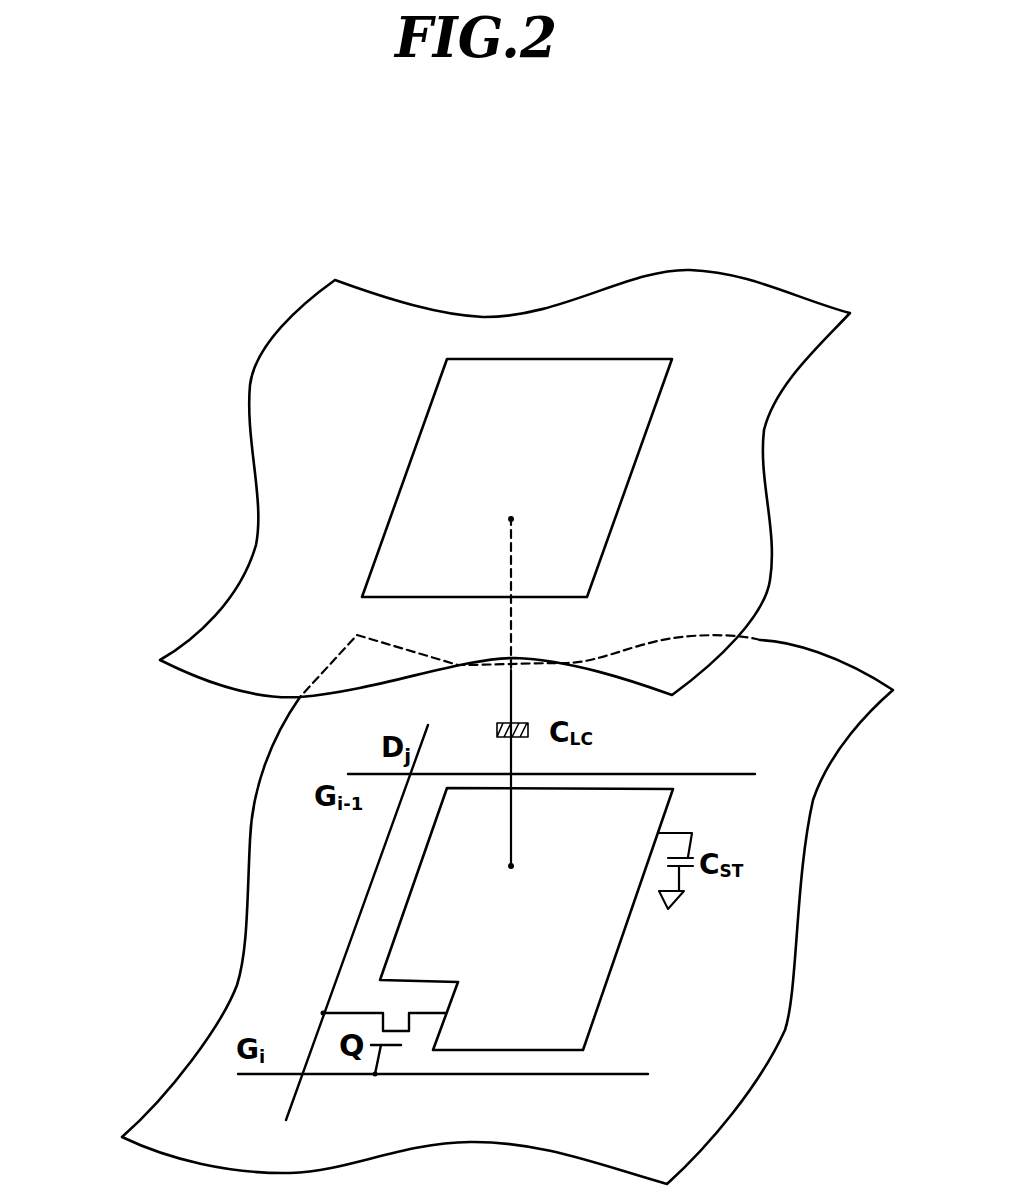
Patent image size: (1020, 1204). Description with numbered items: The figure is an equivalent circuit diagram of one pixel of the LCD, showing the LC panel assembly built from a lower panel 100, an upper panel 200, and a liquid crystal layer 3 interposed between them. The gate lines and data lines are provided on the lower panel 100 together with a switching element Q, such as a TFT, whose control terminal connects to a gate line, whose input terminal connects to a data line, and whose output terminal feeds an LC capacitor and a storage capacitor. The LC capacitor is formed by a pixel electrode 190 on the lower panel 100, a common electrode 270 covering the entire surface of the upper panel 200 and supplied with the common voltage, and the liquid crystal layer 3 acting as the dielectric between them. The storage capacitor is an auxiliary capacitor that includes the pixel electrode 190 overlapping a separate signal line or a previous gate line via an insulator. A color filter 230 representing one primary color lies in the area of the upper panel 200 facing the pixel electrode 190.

The lower panel 100 is at (798, 880).
The upper panel 200 is at (771, 520).
The pixel electrode 190 is at (605, 980).
The color filter 230 is at (603, 554).
The common electrode 270 is at (765, 454).
The liquid crystal layer 3 is at (160, 786).